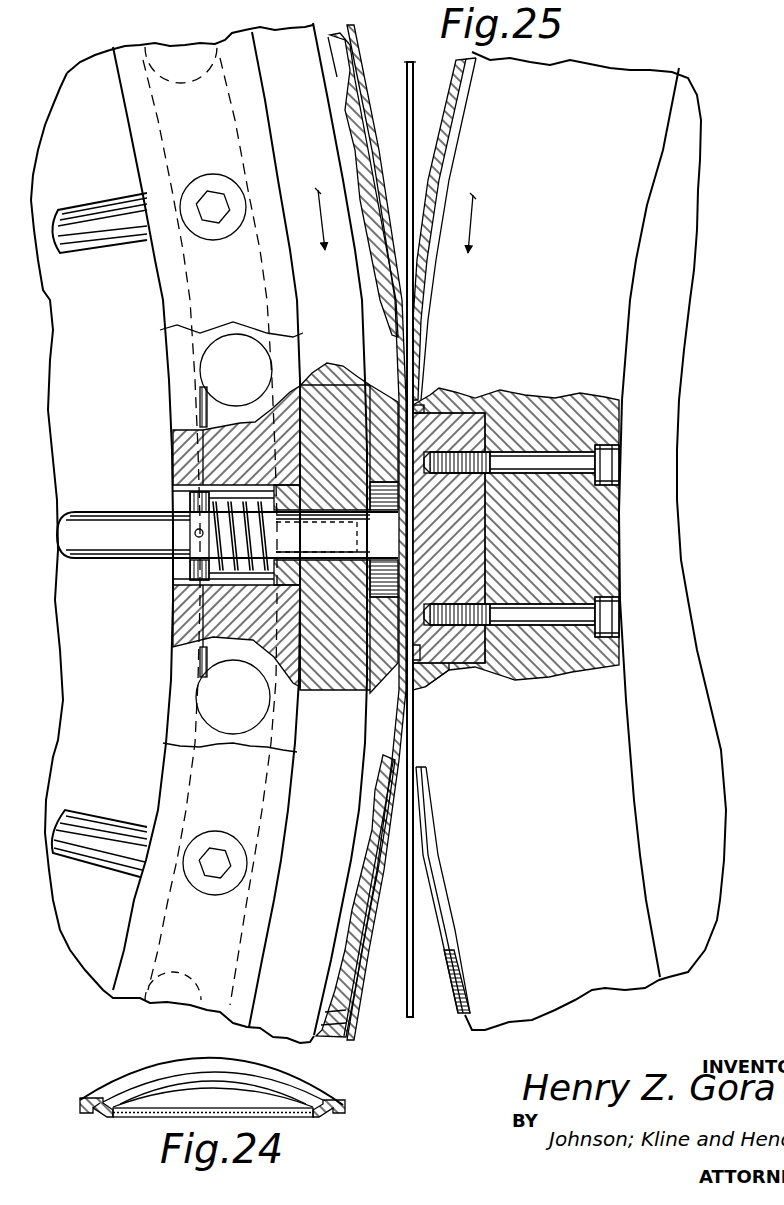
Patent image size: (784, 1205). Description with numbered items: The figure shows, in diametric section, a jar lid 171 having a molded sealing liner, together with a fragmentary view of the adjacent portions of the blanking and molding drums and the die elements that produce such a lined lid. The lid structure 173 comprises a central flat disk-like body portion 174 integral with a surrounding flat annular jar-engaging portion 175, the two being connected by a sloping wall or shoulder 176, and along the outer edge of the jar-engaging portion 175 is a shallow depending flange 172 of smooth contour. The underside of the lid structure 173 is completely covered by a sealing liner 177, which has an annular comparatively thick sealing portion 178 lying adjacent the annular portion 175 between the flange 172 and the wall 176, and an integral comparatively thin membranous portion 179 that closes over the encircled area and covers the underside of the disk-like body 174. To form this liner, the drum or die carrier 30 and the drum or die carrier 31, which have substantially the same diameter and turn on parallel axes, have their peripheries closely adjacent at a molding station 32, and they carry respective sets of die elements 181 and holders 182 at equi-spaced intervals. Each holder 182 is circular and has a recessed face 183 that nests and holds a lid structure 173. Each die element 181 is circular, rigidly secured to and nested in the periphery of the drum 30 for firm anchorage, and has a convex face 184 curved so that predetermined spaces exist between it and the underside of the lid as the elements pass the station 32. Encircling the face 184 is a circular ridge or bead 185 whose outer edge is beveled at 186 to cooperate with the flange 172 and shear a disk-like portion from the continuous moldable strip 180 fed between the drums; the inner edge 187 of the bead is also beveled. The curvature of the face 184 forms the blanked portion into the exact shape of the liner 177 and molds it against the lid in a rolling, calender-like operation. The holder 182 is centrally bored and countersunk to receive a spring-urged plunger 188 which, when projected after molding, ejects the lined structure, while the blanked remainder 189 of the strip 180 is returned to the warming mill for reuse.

In FIG. 25, the drum or die carrier 30 is at (590, 981).
In FIG. 25, the drum or die carrier 31 is at (256, 30).
In FIG. 25, the molding station 32 is at (433, 703).
In FIG. 24, the lid 171 is at (112, 1124).
In FIG. 24, the depending flange 172 is at (80, 1102).
In FIG. 25, the lid structure 173 is at (377, 878).
In FIG. 24, the lid structure 173 is at (187, 1091).
In FIG. 24, the central flat disk-like body portion 174 is at (267, 1103).
In FIG. 24, the flat annular jar-engaging portion 175 is at (312, 1090).
In FIG. 24, the sloping wall or shoulder 176 is at (280, 1090).
In FIG. 24, the sealing liner 177 is at (157, 1117).
In FIG. 25, the annular sealing portion 178 is at (350, 1013).
In FIG. 24, the annular sealing portion 178 is at (97, 1114).
In FIG. 25, the membranous portion 179 is at (372, 905).
In FIG. 24, the membranous portion 179 is at (190, 1107).
In FIG. 25, the continuous strip 180 is at (415, 60).
In FIG. 25, the die element 181 is at (432, 428).
In FIG. 25, the die element or holder 182 is at (385, 386).
In FIG. 25, the recessed face 183 is at (333, 403).
In FIG. 25, the convex face 184 is at (412, 556).
In FIG. 25, the circular ridge or bead 185 is at (418, 409).
In FIG. 25, the beveled outer edge 186 is at (445, 687).
In FIG. 25, the beveled inner edge 187 is at (416, 652).
In FIG. 25, the spring-urged plunger 188 is at (140, 562).
In FIG. 25, the blanked or perforated remainder 189 is at (412, 998).